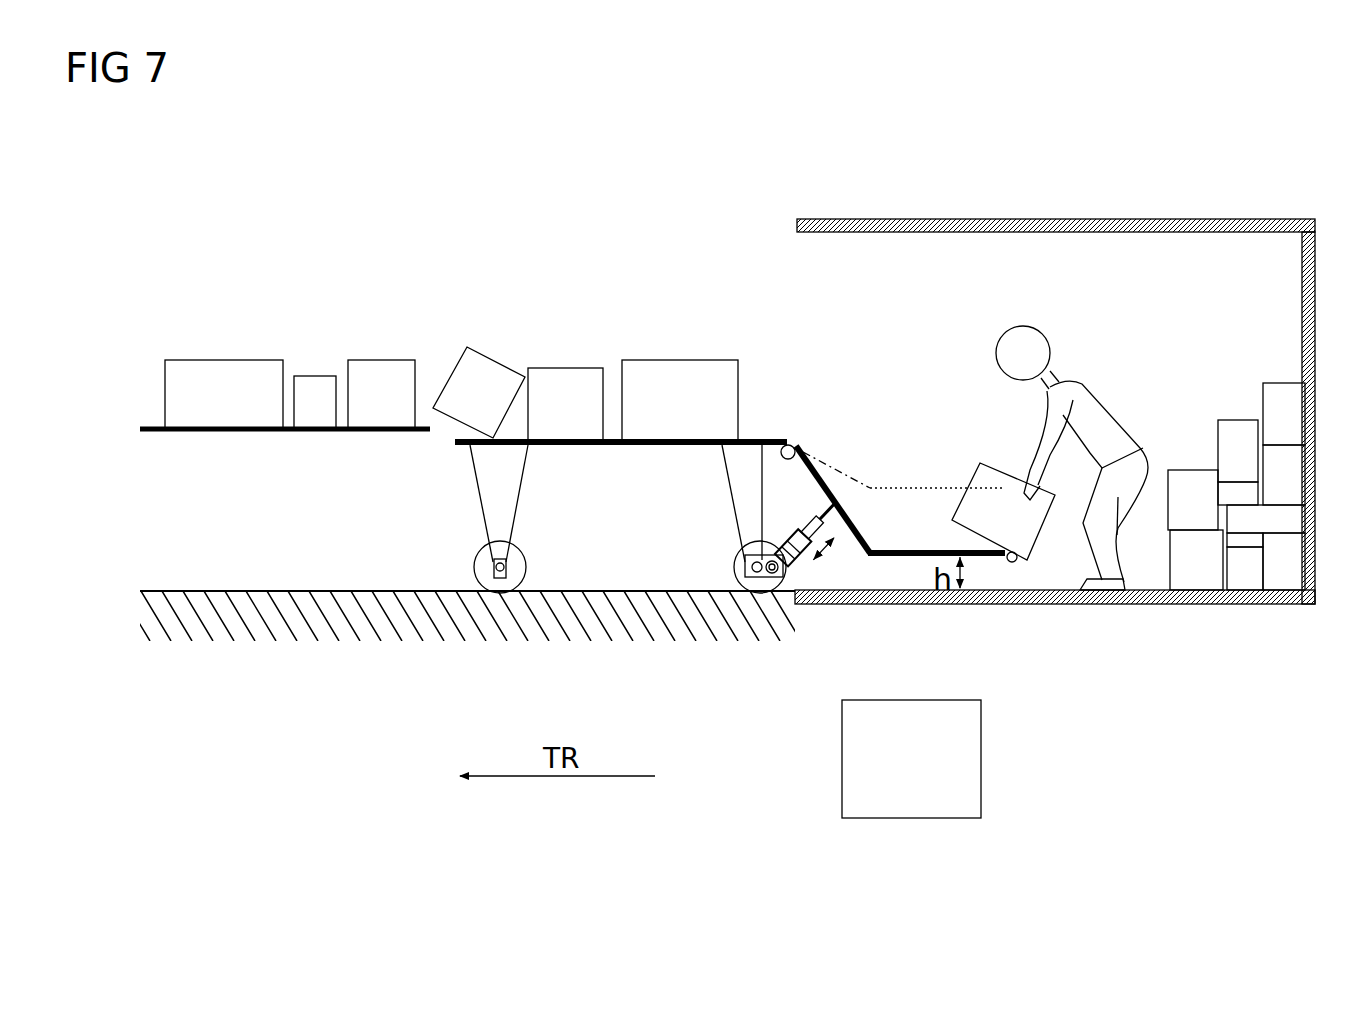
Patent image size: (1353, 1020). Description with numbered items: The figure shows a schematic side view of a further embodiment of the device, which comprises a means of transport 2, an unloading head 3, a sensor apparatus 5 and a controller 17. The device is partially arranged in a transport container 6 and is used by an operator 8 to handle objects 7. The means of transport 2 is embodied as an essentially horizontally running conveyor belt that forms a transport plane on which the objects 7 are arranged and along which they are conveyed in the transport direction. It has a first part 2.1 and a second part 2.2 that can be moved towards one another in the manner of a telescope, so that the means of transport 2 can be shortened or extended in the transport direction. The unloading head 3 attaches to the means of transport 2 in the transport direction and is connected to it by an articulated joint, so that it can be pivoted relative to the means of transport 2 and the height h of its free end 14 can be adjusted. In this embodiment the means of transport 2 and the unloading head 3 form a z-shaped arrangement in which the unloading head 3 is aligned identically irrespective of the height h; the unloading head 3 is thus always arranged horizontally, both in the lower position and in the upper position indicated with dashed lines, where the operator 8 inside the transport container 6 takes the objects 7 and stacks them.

The means of transport 2 is at (850, 470).
The first part 2.1 is at (255, 433).
The second part 2.2 is at (640, 446).
The unloading head 3 is at (903, 558).
The sensor apparatus 5 is at (1012, 563).
The transport container 6 is at (1210, 218).
The objects 7 is at (676, 368).
The operator 8 is at (1102, 423).
The free end 14 is at (1006, 424).
The controller 17 is at (983, 758).